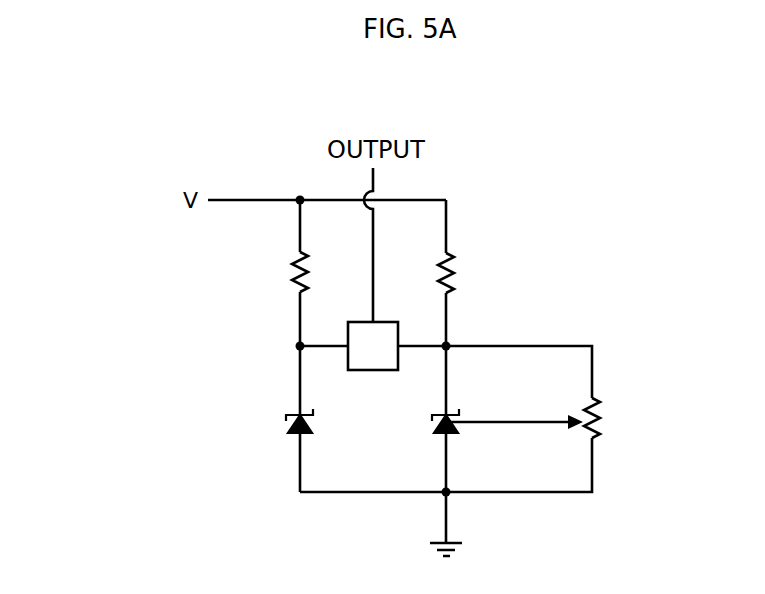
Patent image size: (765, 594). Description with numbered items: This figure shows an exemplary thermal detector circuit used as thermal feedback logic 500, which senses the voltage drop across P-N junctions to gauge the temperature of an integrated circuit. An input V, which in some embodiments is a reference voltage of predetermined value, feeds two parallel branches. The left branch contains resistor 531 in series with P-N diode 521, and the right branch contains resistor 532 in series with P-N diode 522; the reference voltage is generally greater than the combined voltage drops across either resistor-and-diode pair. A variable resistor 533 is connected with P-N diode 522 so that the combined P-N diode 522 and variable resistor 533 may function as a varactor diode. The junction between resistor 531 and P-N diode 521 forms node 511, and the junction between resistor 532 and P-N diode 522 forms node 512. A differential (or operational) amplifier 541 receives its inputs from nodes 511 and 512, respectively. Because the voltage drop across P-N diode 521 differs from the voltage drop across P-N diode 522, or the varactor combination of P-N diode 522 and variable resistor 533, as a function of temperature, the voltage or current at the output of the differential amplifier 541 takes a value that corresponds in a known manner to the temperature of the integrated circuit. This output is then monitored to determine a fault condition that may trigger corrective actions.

The thermal feedback logic 500 is at (141, 123).
The node 511 is at (325, 344).
The node 512 is at (420, 347).
The P-N diode 521 is at (284, 435).
The P-N diode 522 is at (432, 437).
The resistor 531 is at (292, 268).
The resistor 532 is at (462, 267).
The variable resistor 533 is at (600, 428).
The differential amplifier 541 is at (350, 322).